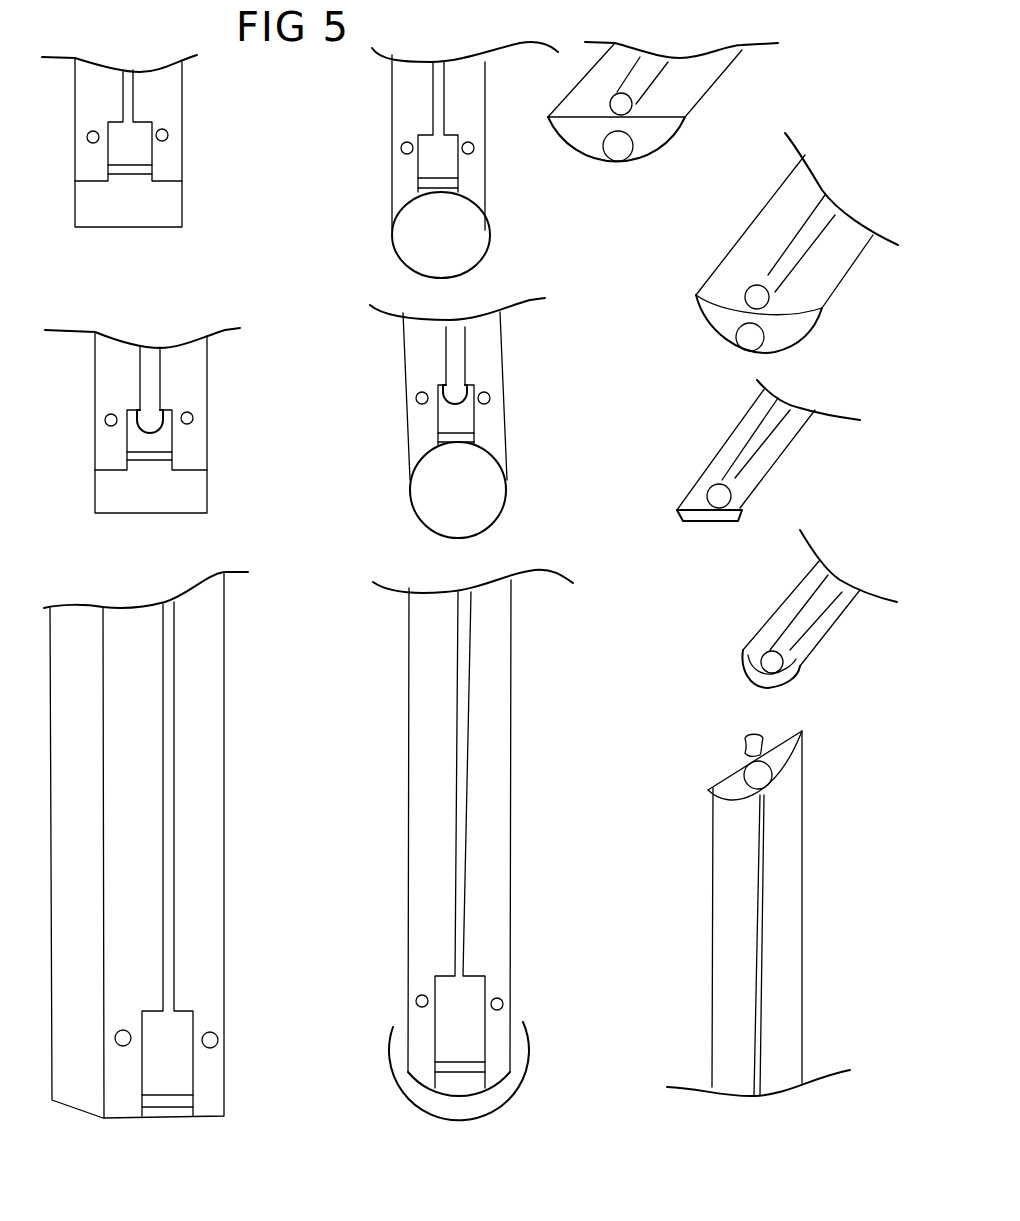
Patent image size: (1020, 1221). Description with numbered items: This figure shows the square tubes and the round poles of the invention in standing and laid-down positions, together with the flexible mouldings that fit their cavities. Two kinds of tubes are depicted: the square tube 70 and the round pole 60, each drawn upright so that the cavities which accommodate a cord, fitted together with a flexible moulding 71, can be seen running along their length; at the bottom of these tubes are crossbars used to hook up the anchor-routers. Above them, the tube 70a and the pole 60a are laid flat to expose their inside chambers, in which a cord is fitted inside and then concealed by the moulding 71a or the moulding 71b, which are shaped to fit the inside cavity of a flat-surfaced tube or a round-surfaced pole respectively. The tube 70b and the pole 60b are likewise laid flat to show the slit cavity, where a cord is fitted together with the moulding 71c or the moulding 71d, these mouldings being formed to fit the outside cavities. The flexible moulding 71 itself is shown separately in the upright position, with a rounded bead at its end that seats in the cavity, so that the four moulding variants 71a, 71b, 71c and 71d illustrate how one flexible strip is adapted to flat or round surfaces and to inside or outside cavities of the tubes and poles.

The square tube 70 is at (234, 673).
The square tube laid flat 70a is at (220, 386).
The square tube laid flat 70b is at (197, 156).
The round pole 60 is at (522, 638).
The round pole laid flat 60a is at (508, 385).
The round pole laid flat 60b is at (500, 190).
The flexible moulding 71 is at (695, 870).
The flexible moulding for inside chamber 71a is at (790, 571).
The flexible moulding for inside chamber 71b is at (737, 408).
The flexible moulding for slit cavity 71c is at (712, 346).
The flexible moulding for slit cavity 71d is at (705, 117).